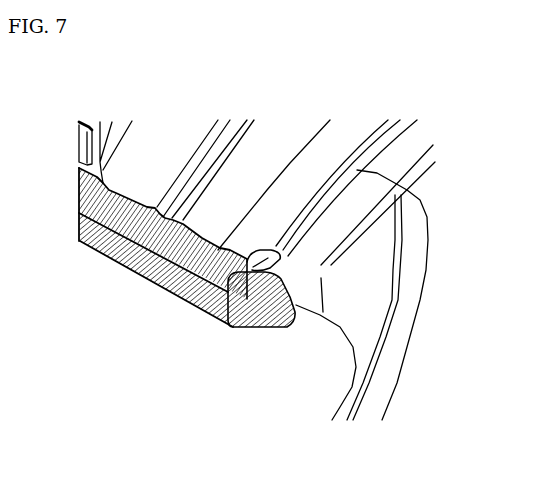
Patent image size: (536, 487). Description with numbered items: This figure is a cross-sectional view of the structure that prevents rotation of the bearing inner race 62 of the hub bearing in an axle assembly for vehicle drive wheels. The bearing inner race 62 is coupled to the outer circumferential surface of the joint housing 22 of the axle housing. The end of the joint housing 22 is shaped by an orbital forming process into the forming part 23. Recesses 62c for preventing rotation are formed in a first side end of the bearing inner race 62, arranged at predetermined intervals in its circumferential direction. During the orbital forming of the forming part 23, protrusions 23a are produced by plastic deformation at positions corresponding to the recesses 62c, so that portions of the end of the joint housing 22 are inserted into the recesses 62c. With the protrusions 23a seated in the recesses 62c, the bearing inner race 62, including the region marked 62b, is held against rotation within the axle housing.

The joint housing 22 is at (150, 278).
The forming part 23 is at (428, 212).
The protrusion 23a is at (233, 327).
The bearing inner race 62 is at (183, 283).
The spoke web 62b is at (234, 186).
The recess 62c is at (278, 247).